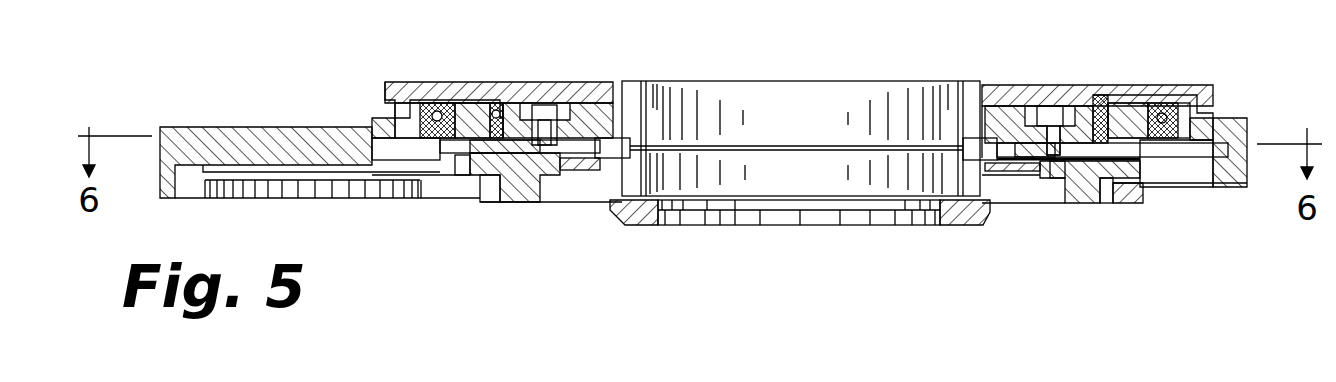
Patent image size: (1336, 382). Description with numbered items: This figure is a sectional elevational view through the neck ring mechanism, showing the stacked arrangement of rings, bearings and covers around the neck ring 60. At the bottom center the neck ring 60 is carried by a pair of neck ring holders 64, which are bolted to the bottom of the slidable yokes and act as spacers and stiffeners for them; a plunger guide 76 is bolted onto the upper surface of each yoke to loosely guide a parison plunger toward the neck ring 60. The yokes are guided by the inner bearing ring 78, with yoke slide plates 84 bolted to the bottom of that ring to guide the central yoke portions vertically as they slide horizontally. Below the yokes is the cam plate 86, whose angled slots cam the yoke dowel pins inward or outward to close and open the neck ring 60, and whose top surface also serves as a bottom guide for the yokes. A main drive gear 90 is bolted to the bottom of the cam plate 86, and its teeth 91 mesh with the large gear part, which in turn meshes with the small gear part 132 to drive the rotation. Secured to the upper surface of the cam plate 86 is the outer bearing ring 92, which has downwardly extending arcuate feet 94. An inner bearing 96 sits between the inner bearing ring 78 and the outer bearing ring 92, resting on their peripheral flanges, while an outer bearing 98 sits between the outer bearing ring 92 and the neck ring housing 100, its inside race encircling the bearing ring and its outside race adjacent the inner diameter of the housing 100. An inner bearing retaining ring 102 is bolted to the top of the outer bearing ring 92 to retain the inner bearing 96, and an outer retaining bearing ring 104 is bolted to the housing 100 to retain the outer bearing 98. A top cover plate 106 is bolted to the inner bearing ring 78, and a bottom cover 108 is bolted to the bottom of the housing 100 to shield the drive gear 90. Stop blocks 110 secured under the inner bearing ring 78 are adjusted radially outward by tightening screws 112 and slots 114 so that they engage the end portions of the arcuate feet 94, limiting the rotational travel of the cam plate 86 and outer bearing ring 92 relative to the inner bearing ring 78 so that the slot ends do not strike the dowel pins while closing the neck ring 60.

The neck ring 60 is at (868, 222).
The neck ring holders 64 is at (969, 198).
The plunger guide 76 is at (963, 95).
The inner bearing ring 78 is at (642, 121).
The yoke slide plates 84 is at (584, 172).
The cam plate 86 is at (1128, 192).
The main drive gear 90 is at (520, 200).
The teeth 91 is at (496, 204).
The outer bearing ring 92 is at (463, 108).
The arcuate feet 94 is at (462, 149).
The inner bearing 96 is at (1100, 108).
The outer bearing 98 is at (383, 120).
The neck ring housing 100 is at (241, 126).
The inner bearing retaining ring 102 is at (490, 100).
The outer retaining bearing ring 104 is at (430, 100).
The top cover plate 106 is at (403, 80).
The bottom cover 108 is at (1195, 190).
The stop blocks 110 is at (487, 176).
The tightening screws 112 is at (543, 106).
The slots 114 is at (572, 100).
The small gear part 132 is at (266, 186).